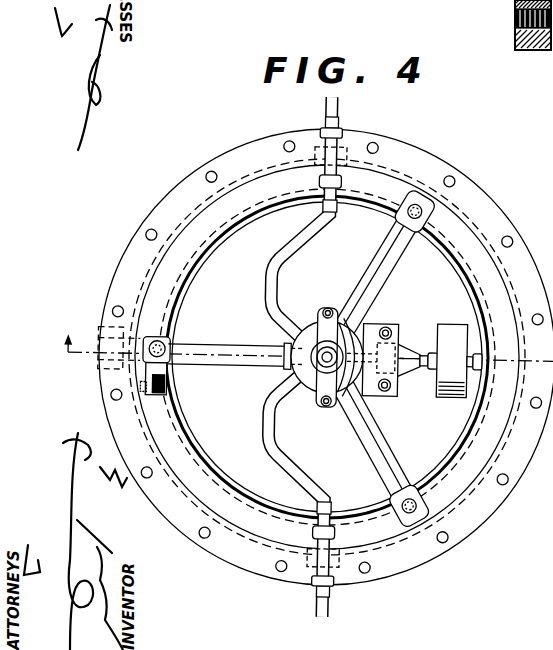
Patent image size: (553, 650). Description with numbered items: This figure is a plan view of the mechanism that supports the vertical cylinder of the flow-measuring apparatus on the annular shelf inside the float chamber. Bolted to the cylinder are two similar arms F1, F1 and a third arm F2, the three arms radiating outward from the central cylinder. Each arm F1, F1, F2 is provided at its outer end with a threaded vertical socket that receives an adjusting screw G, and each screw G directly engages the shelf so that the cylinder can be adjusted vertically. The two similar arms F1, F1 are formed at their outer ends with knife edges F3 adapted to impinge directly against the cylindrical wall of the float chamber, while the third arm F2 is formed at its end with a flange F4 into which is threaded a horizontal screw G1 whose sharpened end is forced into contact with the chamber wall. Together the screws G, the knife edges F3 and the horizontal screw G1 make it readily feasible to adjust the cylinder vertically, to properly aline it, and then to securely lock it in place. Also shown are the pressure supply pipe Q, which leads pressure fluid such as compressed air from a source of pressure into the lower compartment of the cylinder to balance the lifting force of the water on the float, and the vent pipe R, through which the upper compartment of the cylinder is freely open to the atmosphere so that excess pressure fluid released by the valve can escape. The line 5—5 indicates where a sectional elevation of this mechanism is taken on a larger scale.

The section line 5 is at (70, 332).
The arm F1 is at (388, 283).
The third arm F2 is at (268, 346).
The knife edge F3 is at (424, 196).
The flange F4 is at (132, 373).
The adjusting screw G is at (161, 347).
The horizontal screw G1 is at (168, 392).
The pressure supply pipe Q is at (268, 262).
The vent pipe R is at (268, 440).